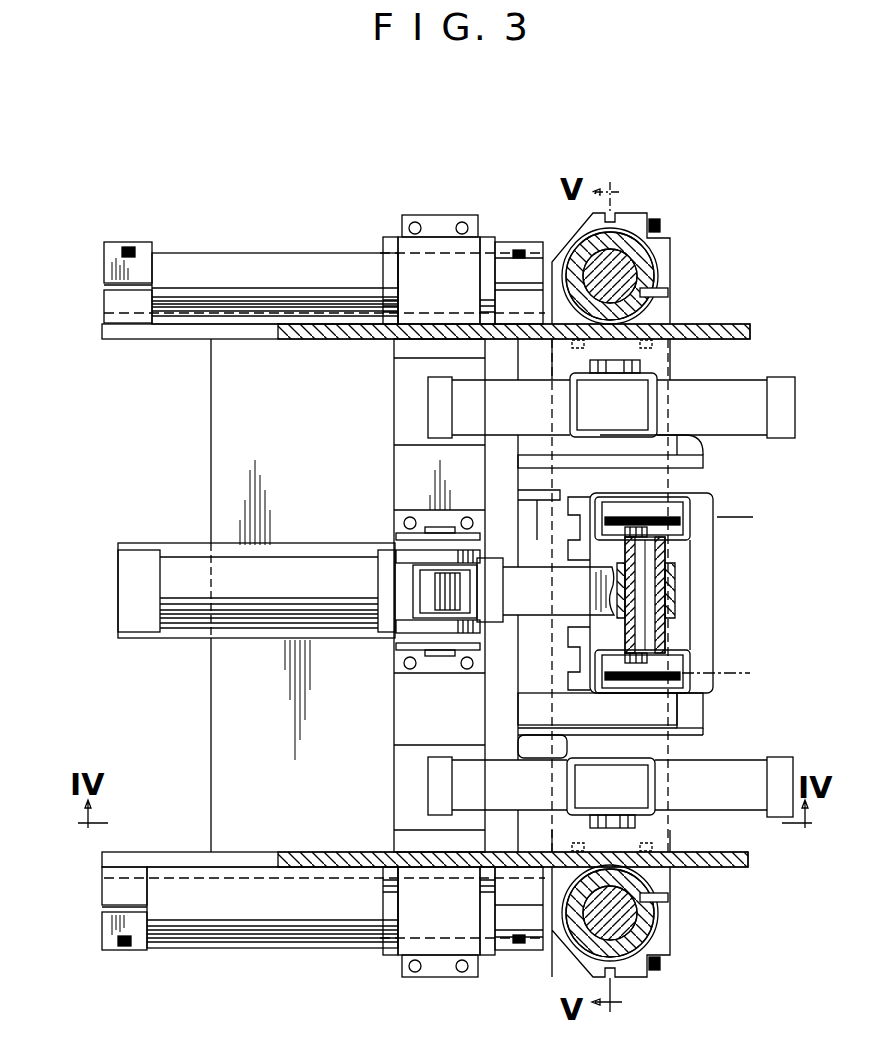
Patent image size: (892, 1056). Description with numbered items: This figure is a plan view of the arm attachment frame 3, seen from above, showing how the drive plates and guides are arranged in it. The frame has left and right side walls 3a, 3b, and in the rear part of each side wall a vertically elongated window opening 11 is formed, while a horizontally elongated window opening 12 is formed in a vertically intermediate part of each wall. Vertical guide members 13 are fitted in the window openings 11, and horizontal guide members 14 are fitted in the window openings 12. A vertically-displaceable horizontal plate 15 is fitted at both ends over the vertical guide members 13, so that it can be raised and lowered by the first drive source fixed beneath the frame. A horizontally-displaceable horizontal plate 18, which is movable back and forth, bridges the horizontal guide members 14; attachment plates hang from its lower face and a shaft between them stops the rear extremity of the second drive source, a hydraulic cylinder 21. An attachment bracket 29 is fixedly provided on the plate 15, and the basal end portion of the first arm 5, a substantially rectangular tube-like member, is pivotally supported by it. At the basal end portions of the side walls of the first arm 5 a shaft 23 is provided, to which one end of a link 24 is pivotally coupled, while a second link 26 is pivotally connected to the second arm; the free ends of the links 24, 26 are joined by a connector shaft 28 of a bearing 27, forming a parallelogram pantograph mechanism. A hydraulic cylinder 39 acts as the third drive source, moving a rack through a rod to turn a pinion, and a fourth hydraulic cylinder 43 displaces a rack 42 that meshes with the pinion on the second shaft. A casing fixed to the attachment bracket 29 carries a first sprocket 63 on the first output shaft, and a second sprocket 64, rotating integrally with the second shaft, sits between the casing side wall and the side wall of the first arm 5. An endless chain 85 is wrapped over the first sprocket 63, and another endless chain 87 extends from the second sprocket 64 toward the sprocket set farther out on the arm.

The arm attachment frame 3 is at (203, 748).
The left side wall 3a is at (332, 853).
The right side wall 3b is at (302, 339).
The first arm 5 is at (750, 591).
The vertically elongated window opening 11 is at (556, 338).
The horizontally elongated window opening 12 is at (142, 339).
The vertical guide member 13 is at (645, 298).
The horizontal guide member 14 is at (316, 260).
The vertically-displaceable horizontal plate 15 is at (667, 354).
The horizontally-displaceable horizontal plate 18 is at (394, 490).
The hydraulic cylinder 21 is at (186, 562).
The shaft 23 is at (652, 622).
The link 24 is at (538, 605).
The link 26 is at (420, 586).
The bearing 27 is at (412, 672).
The connector shaft 28 is at (445, 665).
The attachment bracket 29 is at (760, 741).
The hydraulic cylinder 39 is at (795, 368).
The rack 42 is at (146, 852).
The hydraulic cylinder 43 is at (750, 849).
The first sprocket 63 is at (640, 505).
The second sprocket 64 is at (632, 693).
The endless chain 85 is at (744, 517).
The endless chain 87 is at (750, 673).